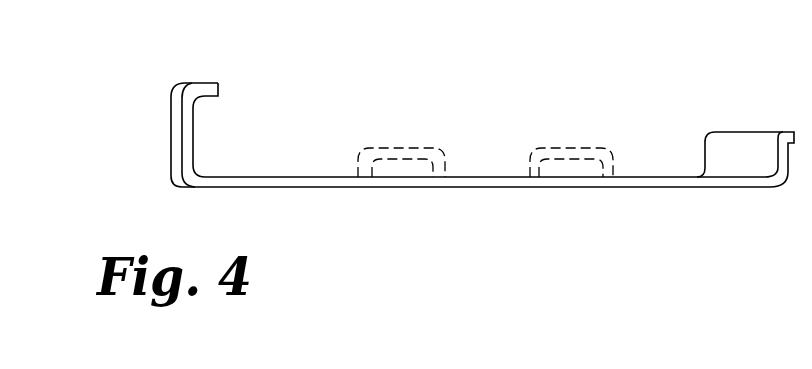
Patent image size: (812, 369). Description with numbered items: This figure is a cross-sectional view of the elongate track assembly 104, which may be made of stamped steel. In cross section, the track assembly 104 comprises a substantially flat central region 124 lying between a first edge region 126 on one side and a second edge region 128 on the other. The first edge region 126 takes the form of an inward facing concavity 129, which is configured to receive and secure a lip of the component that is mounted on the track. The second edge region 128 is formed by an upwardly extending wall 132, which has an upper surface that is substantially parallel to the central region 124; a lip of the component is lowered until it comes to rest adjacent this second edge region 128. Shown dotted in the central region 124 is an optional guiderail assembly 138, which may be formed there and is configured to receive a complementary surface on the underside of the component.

The track assembly 104 is at (409, 84).
The central region 124 is at (293, 177).
The first edge region 126 is at (178, 108).
The second edge region 128 is at (750, 140).
The inward facing concavity 129 is at (193, 134).
The upwardly extending wall 132 is at (703, 153).
The guiderail assembly 138 is at (538, 150).